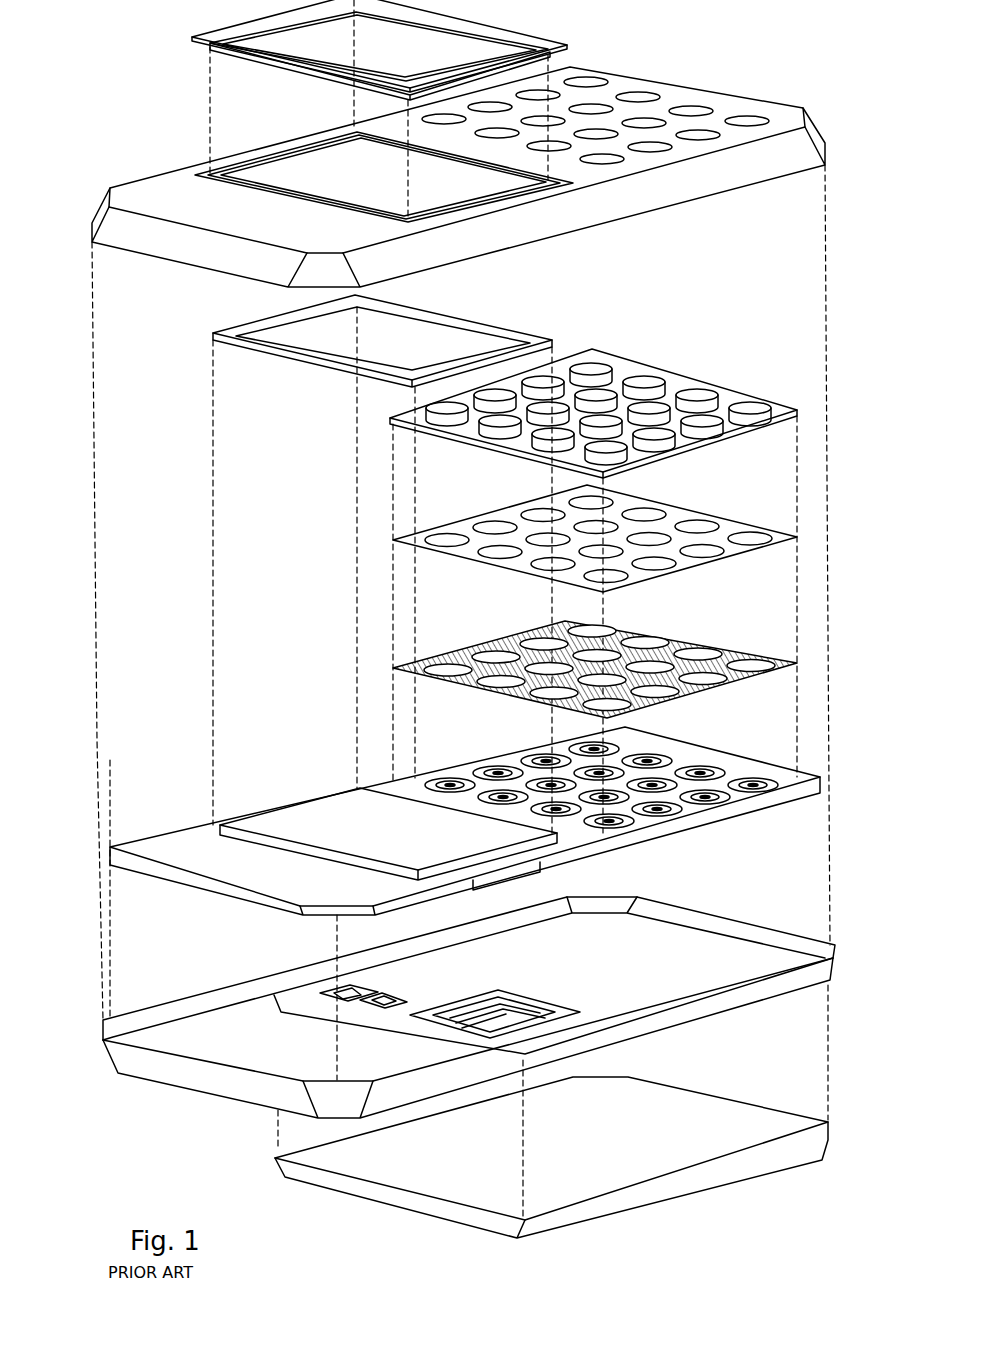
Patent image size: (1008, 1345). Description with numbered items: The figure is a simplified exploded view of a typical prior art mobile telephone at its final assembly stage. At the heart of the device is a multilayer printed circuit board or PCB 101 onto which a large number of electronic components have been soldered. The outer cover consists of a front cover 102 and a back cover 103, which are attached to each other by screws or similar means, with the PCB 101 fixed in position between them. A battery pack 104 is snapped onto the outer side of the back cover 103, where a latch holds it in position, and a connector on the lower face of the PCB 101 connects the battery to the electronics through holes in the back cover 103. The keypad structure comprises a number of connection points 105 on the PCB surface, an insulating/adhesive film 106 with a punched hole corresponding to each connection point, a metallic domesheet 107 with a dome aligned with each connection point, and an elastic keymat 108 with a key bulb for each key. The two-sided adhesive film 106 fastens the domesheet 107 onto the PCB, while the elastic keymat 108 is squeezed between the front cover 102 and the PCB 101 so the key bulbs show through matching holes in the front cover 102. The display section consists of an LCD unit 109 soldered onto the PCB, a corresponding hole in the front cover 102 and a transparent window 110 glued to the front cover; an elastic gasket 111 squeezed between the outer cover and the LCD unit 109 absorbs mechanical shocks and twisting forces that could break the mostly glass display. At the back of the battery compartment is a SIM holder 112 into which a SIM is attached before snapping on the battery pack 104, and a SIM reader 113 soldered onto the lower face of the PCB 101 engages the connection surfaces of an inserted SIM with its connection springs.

The printed circuit board 101 is at (493, 821).
The front cover 102 is at (788, 110).
The back cover 103 is at (491, 1007).
The battery pack 104 is at (777, 1162).
The connection points 105 is at (708, 770).
The insulating/adhesive film 106 is at (757, 675).
The metallic domesheet 107 is at (753, 548).
The elastic keymat 108 is at (767, 422).
The LCD unit 109 is at (250, 820).
The transparent window 110 is at (190, 40).
The elastic gasket 111 is at (213, 343).
The SIM holder 112 is at (570, 1002).
The SIM reader 113 is at (640, 855).